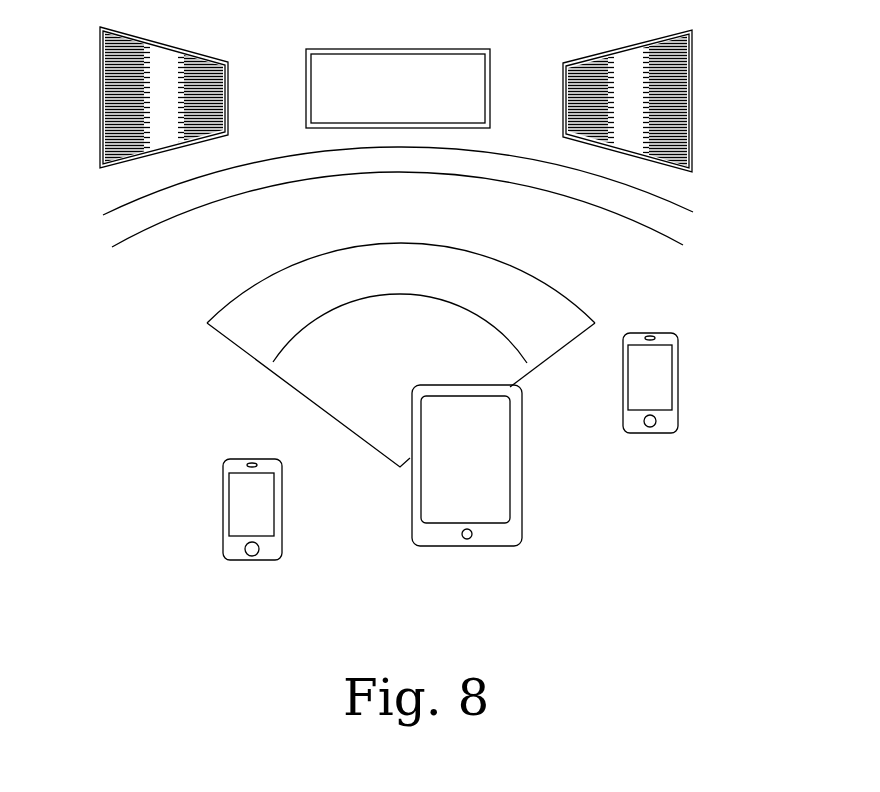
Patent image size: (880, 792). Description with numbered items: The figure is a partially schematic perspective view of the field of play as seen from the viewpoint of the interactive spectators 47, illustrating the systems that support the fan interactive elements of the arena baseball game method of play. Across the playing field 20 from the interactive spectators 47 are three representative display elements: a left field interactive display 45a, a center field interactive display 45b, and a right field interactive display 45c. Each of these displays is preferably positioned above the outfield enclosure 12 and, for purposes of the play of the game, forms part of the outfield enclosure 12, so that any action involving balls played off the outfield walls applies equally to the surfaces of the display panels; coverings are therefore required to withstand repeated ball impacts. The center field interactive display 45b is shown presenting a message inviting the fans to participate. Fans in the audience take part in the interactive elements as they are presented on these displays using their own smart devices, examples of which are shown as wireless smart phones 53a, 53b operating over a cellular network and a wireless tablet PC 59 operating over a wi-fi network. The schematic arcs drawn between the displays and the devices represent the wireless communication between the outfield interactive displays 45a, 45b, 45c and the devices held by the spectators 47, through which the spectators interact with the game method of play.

The left field interactive display 45a is at (98, 117).
The center field interactive display 45b is at (305, 80).
The right field interactive display 45c is at (692, 85).
The outfield enclosure 12 is at (700, 239).
The playing field 20 is at (158, 284).
The wireless tablet PC 59 is at (467, 548).
The wireless smart phone 53a is at (252, 562).
The wireless smart phone 53b is at (650, 437).
The interactive spectators 47 is at (602, 582).